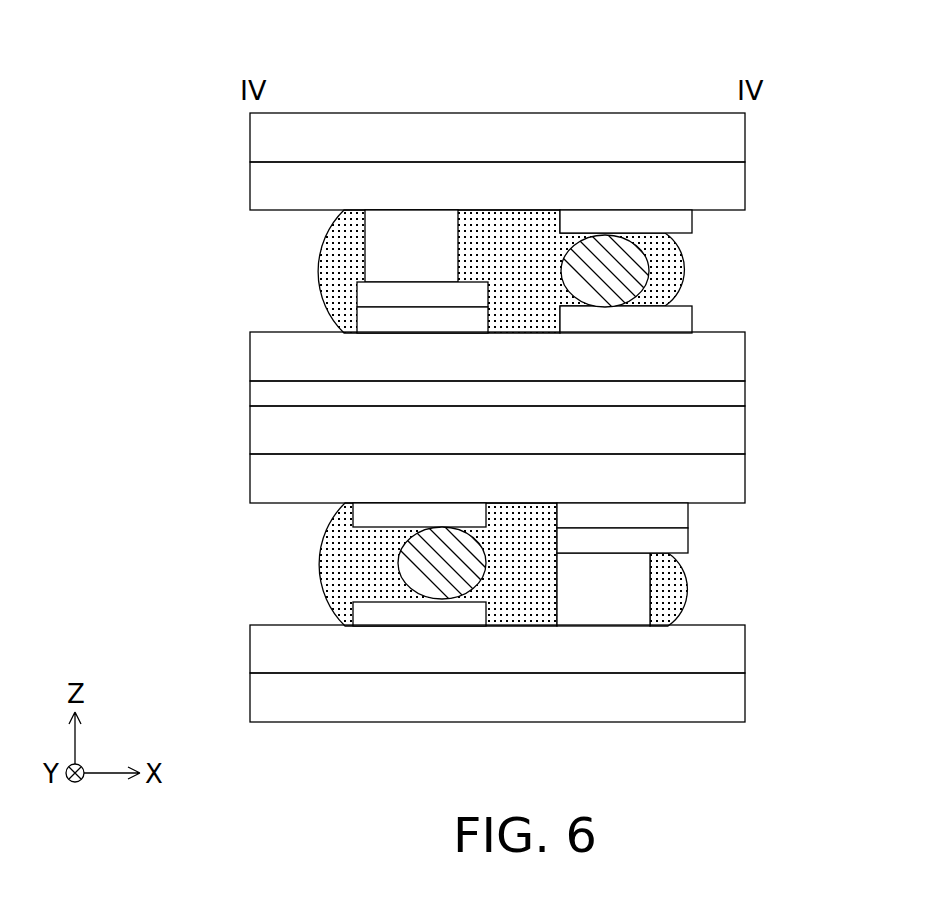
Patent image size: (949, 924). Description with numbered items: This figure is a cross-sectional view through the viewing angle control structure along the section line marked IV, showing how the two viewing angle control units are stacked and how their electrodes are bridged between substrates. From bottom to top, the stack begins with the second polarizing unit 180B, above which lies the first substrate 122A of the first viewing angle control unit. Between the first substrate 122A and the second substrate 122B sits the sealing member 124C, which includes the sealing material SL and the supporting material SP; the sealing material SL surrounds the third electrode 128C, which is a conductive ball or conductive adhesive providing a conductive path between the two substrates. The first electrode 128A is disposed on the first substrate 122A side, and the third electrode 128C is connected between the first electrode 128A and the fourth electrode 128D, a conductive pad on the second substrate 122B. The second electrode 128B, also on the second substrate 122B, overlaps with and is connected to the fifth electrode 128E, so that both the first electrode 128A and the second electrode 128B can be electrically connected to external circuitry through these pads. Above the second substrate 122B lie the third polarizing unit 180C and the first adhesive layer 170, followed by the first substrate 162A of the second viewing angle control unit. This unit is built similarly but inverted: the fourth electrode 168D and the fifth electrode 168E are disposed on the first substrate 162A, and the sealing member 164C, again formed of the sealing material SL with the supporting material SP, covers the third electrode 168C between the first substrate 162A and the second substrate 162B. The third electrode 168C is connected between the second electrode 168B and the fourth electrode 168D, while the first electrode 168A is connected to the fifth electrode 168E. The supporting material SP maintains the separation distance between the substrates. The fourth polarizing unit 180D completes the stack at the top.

The fourth polarizing unit 180D is at (728, 139).
The second substrate 162B is at (728, 186).
The sealing member 164C is at (503, 60).
The second electrode 168B is at (678, 221).
The third electrode 168C is at (612, 268).
The fourth electrode 168D is at (675, 321).
The first electrode 168A is at (380, 295).
The fifth electrode 168E is at (380, 320).
The first substrate 162A is at (728, 360).
The first adhesive layer 170 is at (728, 394).
The third polarizing unit 180C is at (728, 435).
The second substrate 122B is at (728, 476).
The sealing member 124C is at (857, 553).
The fourth electrode 128D is at (372, 514).
The fifth electrode 128E is at (678, 514).
The second electrode 128B is at (678, 540).
The third electrode 128C is at (420, 560).
The first electrode 128A is at (372, 609).
The first substrate 122A is at (728, 649).
The second polarizing unit 180B is at (728, 700).
The supporting material SP is at (405, 235).
The sealing material SL is at (499, 228).